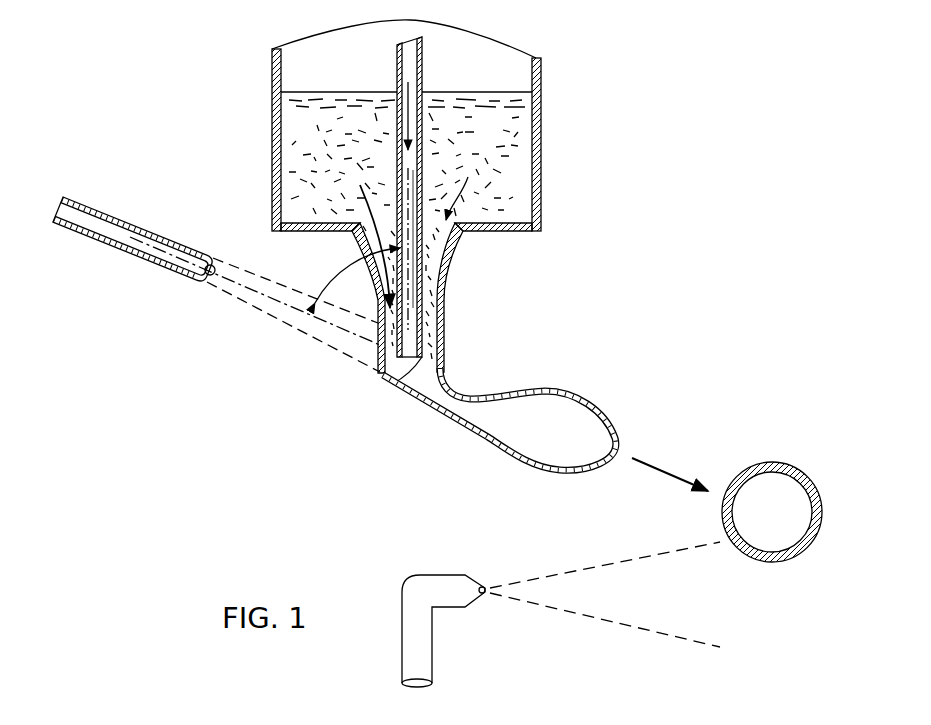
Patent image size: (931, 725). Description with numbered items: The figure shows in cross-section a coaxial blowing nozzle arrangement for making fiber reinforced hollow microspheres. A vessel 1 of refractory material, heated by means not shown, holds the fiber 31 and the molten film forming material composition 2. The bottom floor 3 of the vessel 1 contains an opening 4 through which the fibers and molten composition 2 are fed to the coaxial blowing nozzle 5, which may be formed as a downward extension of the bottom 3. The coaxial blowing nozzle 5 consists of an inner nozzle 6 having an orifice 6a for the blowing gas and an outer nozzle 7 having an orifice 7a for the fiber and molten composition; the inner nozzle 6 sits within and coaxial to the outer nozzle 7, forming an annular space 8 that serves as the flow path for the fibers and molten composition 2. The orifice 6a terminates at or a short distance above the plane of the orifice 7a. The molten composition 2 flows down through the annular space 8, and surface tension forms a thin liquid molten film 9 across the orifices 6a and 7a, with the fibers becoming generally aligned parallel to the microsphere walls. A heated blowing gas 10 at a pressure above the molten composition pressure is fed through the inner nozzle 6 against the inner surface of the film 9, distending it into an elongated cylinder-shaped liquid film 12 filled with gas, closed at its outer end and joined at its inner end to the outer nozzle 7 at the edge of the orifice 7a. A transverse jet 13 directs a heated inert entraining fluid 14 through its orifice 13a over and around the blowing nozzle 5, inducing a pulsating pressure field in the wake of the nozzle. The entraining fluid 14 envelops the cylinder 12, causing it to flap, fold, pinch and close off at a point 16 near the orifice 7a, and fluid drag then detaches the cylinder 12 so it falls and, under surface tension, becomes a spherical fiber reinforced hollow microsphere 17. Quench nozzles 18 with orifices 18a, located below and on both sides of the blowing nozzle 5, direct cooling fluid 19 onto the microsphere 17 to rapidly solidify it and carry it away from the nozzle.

The vessel 1 is at (549, 110).
The molten film forming material composition 2 is at (368, 234).
The bottom floor 3 is at (291, 224).
The opening 4 is at (462, 187).
The coaxial blowing nozzle 5 is at (428, 327).
The inner nozzle 6 is at (423, 161).
The orifice 6a is at (412, 355).
The outer nozzle 7 is at (379, 366).
The orifice 7a is at (412, 386).
The annular space 8 is at (441, 308).
The liquid molten film 9 is at (440, 369).
The blowing gas 10 is at (411, 72).
The elongated cylinder-shaped liquid film 12 is at (499, 413).
The transverse jet 13 is at (205, 258).
The transverse jet nozzle orifice 13a is at (217, 267).
The entraining fluid 14 is at (148, 229).
The point 16 is at (441, 401).
The fiber reinforced hollow microsphere 17 is at (777, 462).
The quench nozzle 18 is at (444, 576).
The orifice 18a is at (487, 589).
The cooling fluid 19 is at (591, 571).
The fiber 31 is at (518, 132).